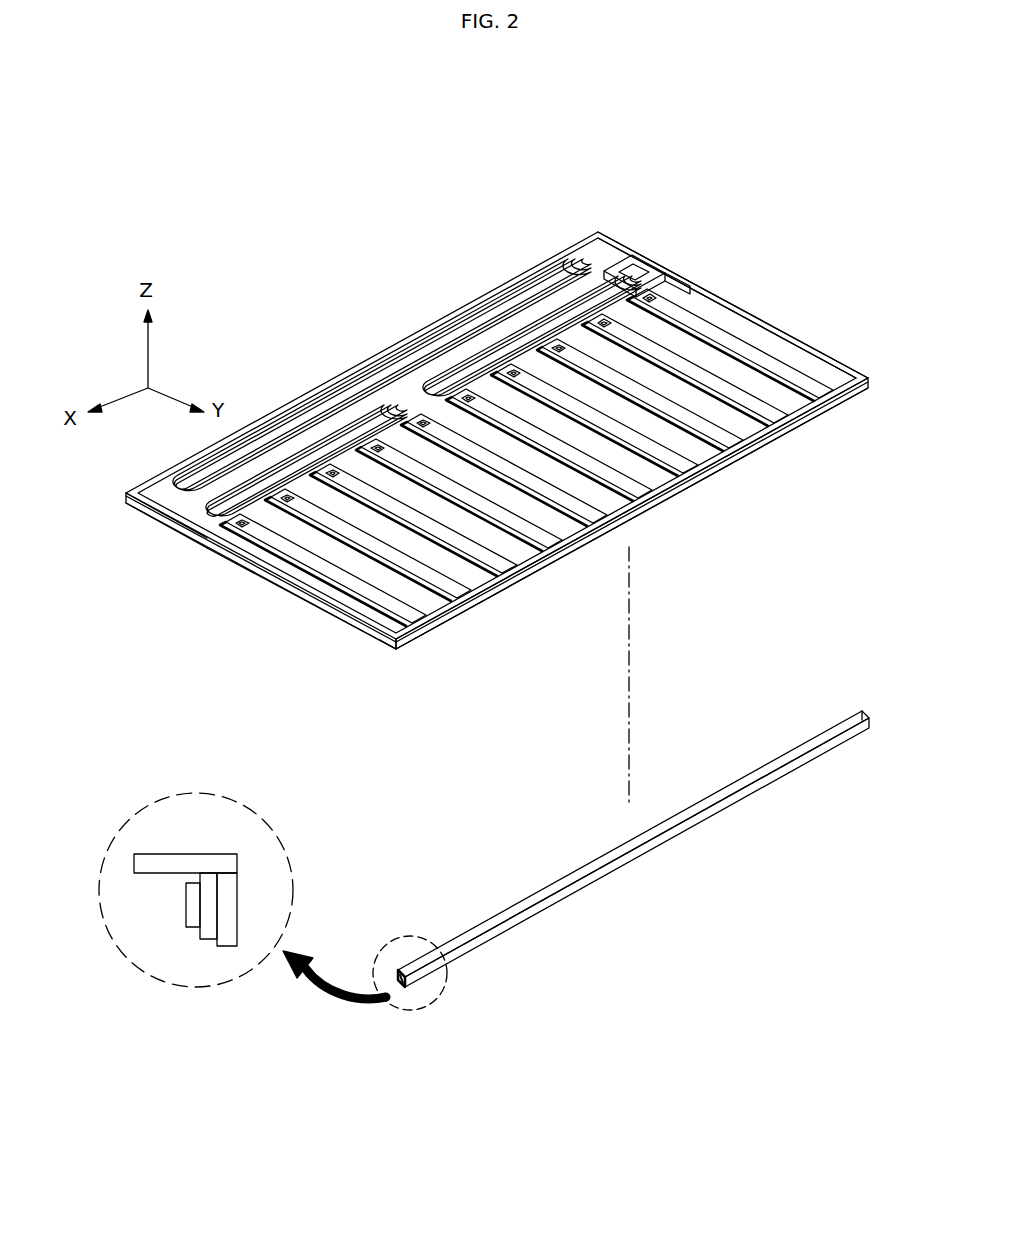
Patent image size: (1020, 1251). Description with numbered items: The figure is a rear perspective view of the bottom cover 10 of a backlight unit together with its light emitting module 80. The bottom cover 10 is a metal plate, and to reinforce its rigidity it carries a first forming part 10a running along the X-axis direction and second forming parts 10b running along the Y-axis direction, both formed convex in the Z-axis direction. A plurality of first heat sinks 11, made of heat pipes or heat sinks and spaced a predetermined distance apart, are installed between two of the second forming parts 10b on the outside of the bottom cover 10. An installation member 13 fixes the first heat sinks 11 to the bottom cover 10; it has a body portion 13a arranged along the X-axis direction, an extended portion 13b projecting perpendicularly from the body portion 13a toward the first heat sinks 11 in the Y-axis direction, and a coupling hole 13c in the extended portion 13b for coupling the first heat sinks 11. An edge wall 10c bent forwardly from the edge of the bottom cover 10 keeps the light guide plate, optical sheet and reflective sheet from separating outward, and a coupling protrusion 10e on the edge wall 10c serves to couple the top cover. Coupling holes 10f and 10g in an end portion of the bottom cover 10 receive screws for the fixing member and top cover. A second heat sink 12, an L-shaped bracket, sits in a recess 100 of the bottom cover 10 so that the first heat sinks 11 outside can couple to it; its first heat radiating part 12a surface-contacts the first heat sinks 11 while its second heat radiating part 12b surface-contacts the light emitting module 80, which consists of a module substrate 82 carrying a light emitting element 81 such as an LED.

The recess 100 is at (377, 642).
The bottom cover 10 is at (597, 238).
The first forming part 10a is at (348, 393).
The second forming part 10b is at (770, 393).
The edge wall 10c is at (158, 515).
The coupling protrusion 10e is at (243, 563).
The coupling hole 10f is at (412, 640).
The coupling hole 10g is at (478, 600).
The first heat sink 11 is at (723, 440).
The second heat sink 12 is at (484, 918).
The first heat radiating part 12a is at (477, 933).
The second heat radiating part 12b is at (428, 968).
The installation member 13 is at (682, 243).
The body portion 13a is at (632, 268).
The extended portion 13b is at (713, 275).
The coupling hole 13c is at (663, 300).
The light emitting module 80 is at (269, 1023).
The light emitting element 81 is at (400, 982).
The module substrate 82 is at (402, 982).